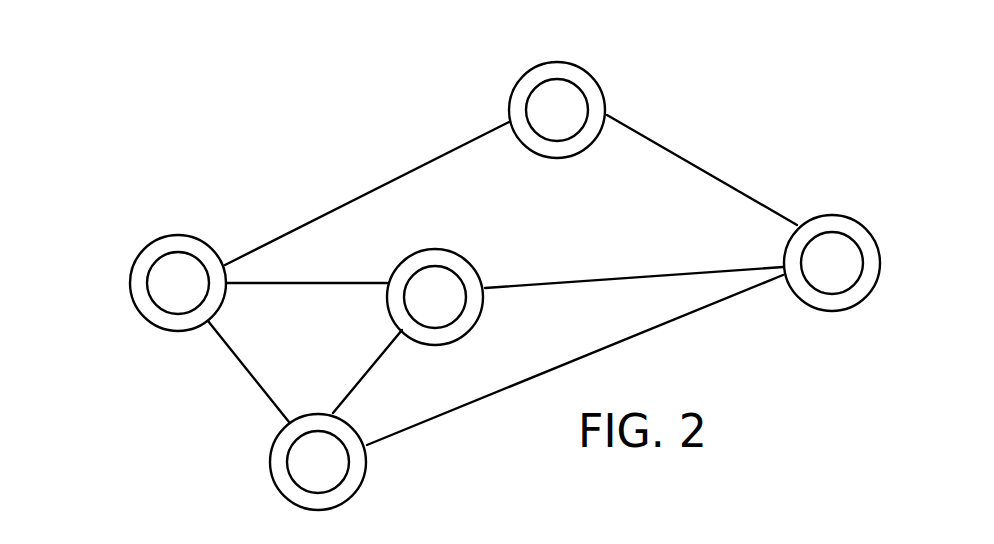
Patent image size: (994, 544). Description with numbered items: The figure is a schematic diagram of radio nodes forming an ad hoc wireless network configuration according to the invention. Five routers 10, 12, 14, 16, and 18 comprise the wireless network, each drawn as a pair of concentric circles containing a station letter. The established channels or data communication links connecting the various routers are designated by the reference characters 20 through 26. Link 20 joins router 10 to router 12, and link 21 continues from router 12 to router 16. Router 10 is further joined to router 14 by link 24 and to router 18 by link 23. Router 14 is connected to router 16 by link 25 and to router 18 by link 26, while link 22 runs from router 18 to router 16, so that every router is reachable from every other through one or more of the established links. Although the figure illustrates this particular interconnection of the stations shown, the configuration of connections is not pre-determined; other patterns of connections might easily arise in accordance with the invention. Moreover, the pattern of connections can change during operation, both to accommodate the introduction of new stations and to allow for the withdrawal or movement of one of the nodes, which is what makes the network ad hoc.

The router 10 is at (130, 284).
The router 12 is at (605, 88).
The router 14 is at (483, 275).
The router 16 is at (880, 240).
The router 18 is at (270, 462).
The data communication link 20 is at (367, 193).
The data communication link 21 is at (702, 170).
The data communication link 22 is at (575, 360).
The data communication link 23 is at (248, 371).
The data communication link 24 is at (306, 270).
The data communication link 25 is at (634, 271).
The data communication link 26 is at (367, 371).